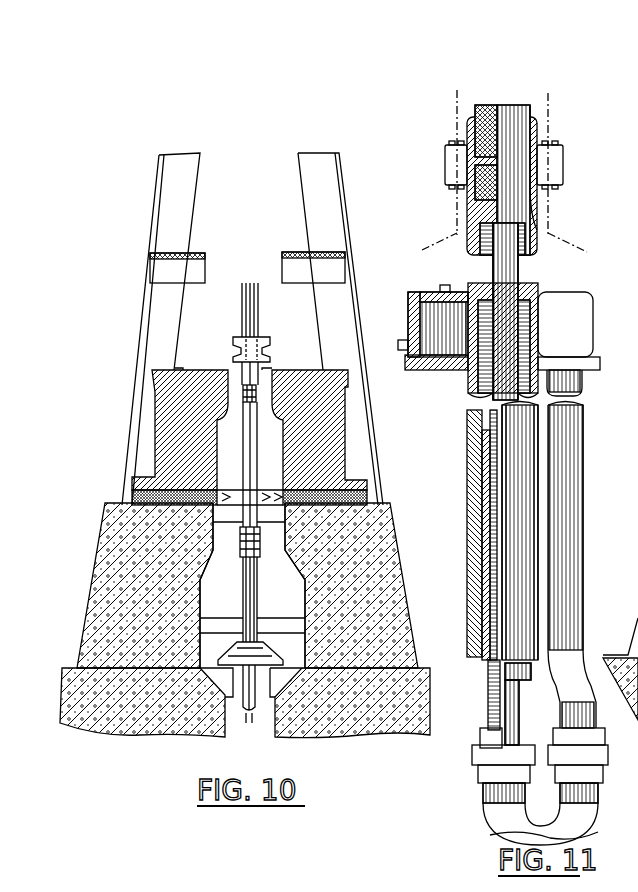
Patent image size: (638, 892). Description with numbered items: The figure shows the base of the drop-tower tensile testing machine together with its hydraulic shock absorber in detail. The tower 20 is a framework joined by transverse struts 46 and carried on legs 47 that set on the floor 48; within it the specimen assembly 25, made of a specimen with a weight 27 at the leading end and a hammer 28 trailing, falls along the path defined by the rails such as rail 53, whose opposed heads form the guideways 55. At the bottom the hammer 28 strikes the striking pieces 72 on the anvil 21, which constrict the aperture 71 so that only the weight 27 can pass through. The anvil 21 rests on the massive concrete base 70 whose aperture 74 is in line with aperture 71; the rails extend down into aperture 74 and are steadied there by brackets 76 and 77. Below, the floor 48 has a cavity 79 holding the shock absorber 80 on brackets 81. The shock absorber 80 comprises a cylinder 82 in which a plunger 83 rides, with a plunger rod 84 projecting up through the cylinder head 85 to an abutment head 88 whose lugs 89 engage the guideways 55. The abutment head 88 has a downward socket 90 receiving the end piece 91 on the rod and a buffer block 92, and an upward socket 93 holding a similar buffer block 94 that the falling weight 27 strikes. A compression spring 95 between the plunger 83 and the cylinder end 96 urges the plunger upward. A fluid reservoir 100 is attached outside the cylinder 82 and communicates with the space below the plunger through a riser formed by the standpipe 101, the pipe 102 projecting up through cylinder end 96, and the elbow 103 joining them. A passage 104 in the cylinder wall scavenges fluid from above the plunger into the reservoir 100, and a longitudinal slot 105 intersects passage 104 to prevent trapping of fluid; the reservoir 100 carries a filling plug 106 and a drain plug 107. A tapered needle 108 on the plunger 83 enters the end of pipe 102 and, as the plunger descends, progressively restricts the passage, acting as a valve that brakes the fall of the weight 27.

In FIG. 10, the tower 20 is at (152, 197).
In FIG. 10, the anvil 21 is at (338, 421).
In FIG. 10, the specimen assembly 25 is at (268, 353).
In FIG. 10, the weight 27 is at (244, 402).
In FIG. 10, the hammer 28 is at (240, 342).
In FIG. 10, the transverse struts 46 is at (331, 266).
In FIG. 10, the legs 47 is at (146, 336).
In FIG. 10, the floor 48 is at (424, 668).
In FIG. 10, the rail 53 is at (258, 460).
In FIG. 11, the guideways 55 is at (504, 178).
In FIG. 10, the base 70 is at (110, 566).
In FIG. 10, the aperture 71 is at (222, 447).
In FIG. 10, the striking pieces 72 is at (194, 368).
In FIG. 10, the aperture 74 is at (252, 585).
In FIG. 10, the bracket 76 is at (226, 527).
In FIG. 10, the bracket 77 is at (222, 626).
In FIG. 10, the cavity 79 is at (230, 735).
In FIG. 10, the shock absorber 80 is at (258, 712).
In FIG. 11, the shock absorber 80 is at (591, 408).
In FIG. 10, the brackets 81 is at (282, 666).
In FIG. 11, the cylinder 82 is at (470, 492).
In FIG. 11, the plunger 83 is at (468, 455).
In FIG. 10, the plunger rod 84 is at (257, 598).
In FIG. 11, the plunger rod 84 is at (514, 267).
In FIG. 11, the cylinder head 85 is at (483, 283).
In FIG. 10, the abutment head 88 is at (259, 548).
In FIG. 11, the abutment head 88 is at (537, 130).
In FIG. 11, the lugs 89 is at (446, 171).
In FIG. 11, the socket 90 is at (473, 206).
In FIG. 11, the end piece 91 is at (534, 236).
In FIG. 11, the buffer block 92 is at (500, 194).
In FIG. 11, the socket 93 is at (482, 131).
In FIG. 11, the buffer block 94 is at (475, 118).
In FIG. 11, the compression spring 95 is at (490, 512).
In FIG. 11, the cylinder end 96 is at (483, 672).
In FIG. 10, the fluid reservoir 100 is at (262, 646).
In FIG. 11, the fluid reservoir 100 is at (587, 316).
In FIG. 11, the standpipe 101 is at (576, 465).
In FIG. 11, the pipe 102 is at (519, 722).
In FIG. 11, the elbow 103 is at (488, 812).
In FIG. 11, the passage 104 is at (549, 350).
In FIG. 11, the longitudinal slot 105 is at (547, 328).
In FIG. 11, the filling plug 106 is at (432, 305).
In FIG. 11, the drain plug 107 is at (406, 346).
In FIG. 11, the tapered needle 108 is at (520, 698).